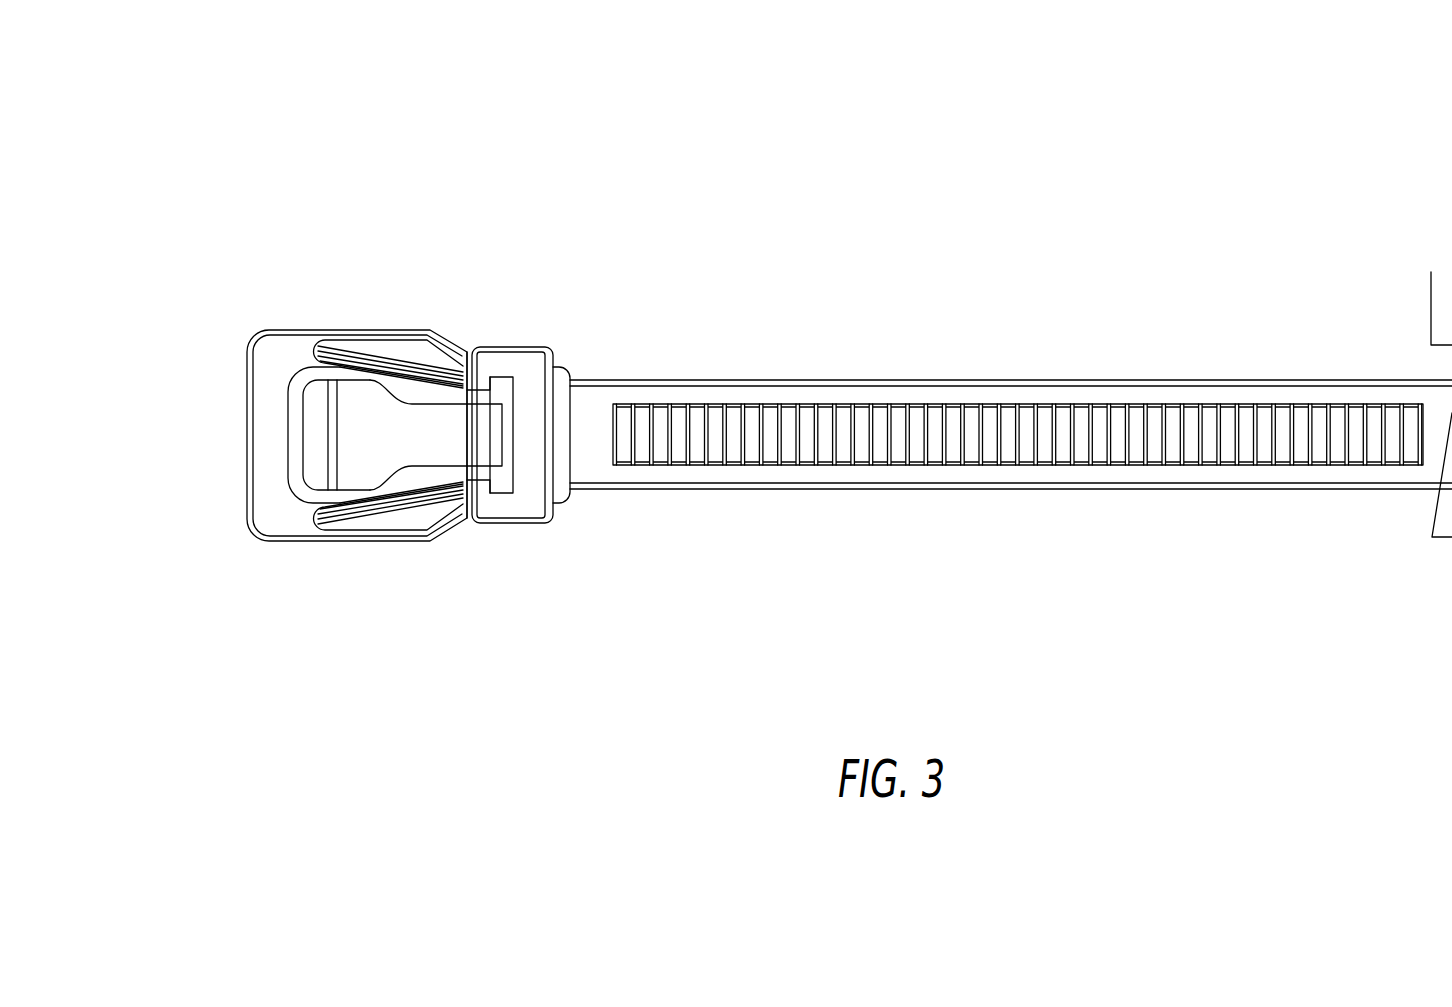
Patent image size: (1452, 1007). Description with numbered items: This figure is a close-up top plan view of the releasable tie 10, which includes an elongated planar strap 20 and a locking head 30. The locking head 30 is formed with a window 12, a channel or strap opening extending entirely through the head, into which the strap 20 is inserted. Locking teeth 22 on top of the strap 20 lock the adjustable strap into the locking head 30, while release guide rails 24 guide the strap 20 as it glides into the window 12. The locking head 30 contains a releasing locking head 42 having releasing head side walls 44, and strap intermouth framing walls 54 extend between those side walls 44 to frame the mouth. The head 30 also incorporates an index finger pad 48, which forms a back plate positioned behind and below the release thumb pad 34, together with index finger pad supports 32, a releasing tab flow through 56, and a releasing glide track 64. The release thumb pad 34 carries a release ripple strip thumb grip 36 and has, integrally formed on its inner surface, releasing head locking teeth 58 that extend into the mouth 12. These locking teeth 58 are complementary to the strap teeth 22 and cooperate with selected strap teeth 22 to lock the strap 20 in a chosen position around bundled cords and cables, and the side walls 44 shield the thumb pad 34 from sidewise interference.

The releasable tie 10 is at (630, 200).
The window 12 is at (506, 470).
The elongated planar strap 20 is at (941, 285).
The locking teeth 22 is at (1278, 460).
The release guide rails 24 is at (977, 395).
The locking head 30 is at (200, 438).
The index finger pad supports 32 is at (427, 356).
The release thumb pad 34 is at (358, 433).
The release ripple strip thumb grip 36 is at (313, 463).
The releasing locking head 42 is at (543, 360).
The releasing head side walls 44 is at (538, 365).
The index finger pad 48 is at (276, 356).
The strap intermouth framing walls 54 is at (512, 413).
The releasing tab flow through 56 is at (293, 420).
The releasing head locking teeth 58 is at (502, 378).
The releasing glide track 64 is at (483, 425).